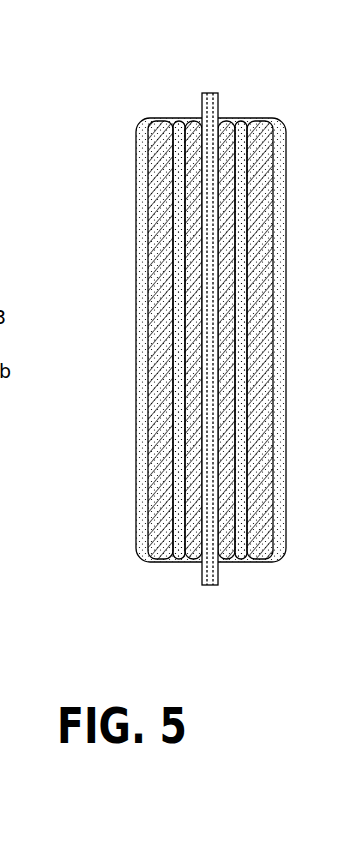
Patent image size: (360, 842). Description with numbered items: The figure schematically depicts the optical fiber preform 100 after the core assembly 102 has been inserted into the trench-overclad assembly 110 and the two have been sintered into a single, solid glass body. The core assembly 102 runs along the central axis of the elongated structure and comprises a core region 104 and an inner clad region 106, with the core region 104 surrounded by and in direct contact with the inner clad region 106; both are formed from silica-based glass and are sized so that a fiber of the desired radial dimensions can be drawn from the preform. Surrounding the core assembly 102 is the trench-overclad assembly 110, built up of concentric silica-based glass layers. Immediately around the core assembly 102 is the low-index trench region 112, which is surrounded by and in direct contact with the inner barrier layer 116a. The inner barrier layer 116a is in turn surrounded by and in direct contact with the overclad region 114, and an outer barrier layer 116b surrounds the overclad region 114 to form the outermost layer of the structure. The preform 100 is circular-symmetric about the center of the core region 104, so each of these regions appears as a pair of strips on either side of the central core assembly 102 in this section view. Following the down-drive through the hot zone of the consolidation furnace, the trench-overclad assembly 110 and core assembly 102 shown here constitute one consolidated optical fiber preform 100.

The optical fiber preform 100 is at (302, 183).
The core assembly 102 is at (227, 85).
The core region 104 is at (216, 112).
The inner clad region 106 is at (203, 102).
The trench-overclad assembly 110 is at (78, 342).
The low-index trench region 112 is at (200, 313).
The overclad region 114 is at (162, 268).
The inner barrier layer 116a is at (181, 226).
The outer barrier layer 116b is at (143, 360).